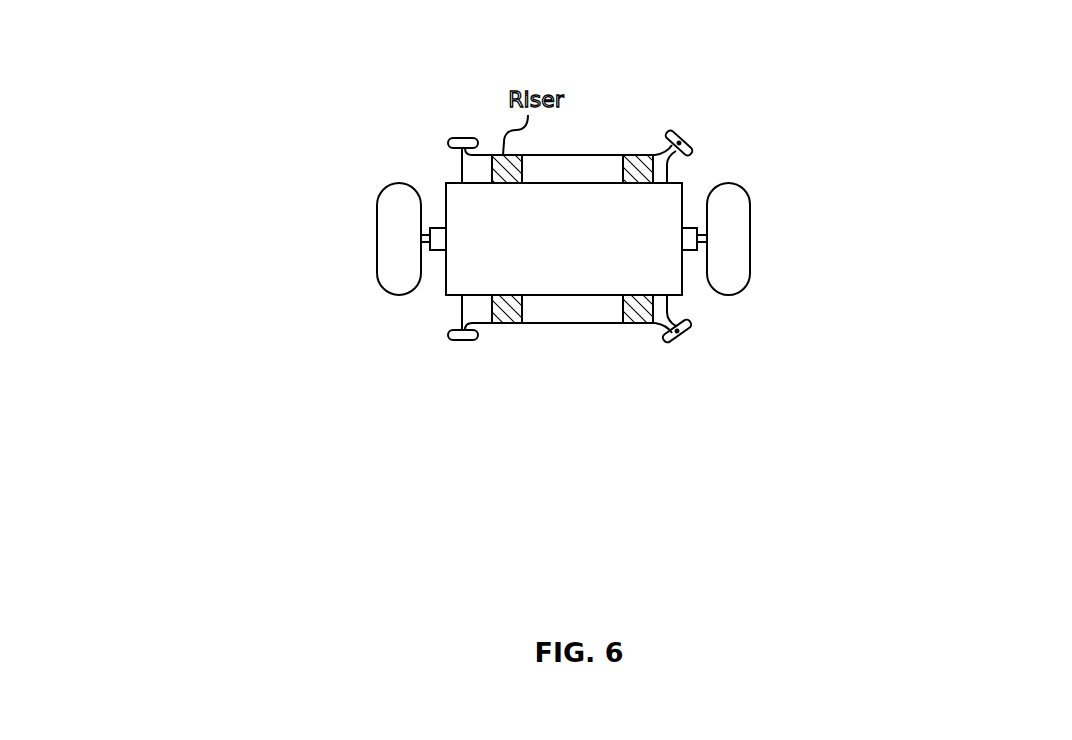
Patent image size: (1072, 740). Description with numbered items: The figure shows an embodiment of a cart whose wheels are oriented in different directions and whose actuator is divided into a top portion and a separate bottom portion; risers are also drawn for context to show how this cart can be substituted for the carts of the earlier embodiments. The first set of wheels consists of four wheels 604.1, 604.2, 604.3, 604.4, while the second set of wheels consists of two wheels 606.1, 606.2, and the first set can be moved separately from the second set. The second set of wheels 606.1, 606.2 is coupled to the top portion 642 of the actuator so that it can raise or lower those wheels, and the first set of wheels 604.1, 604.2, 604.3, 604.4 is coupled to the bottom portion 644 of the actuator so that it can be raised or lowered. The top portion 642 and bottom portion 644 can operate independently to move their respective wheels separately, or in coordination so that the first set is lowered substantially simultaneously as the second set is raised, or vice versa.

The first set of wheels 604.1 is at (460, 137).
The first set of wheels 604.2 is at (448, 340).
The first set of wheels 604.3 is at (675, 136).
The first set of wheels 604.4 is at (687, 332).
The second set of wheels 606.1 is at (261, 241).
The second set of wheels 606.2 is at (750, 255).
The top portion of actuator 642 is at (610, 297).
The bottom portion of actuator 644 is at (542, 325).